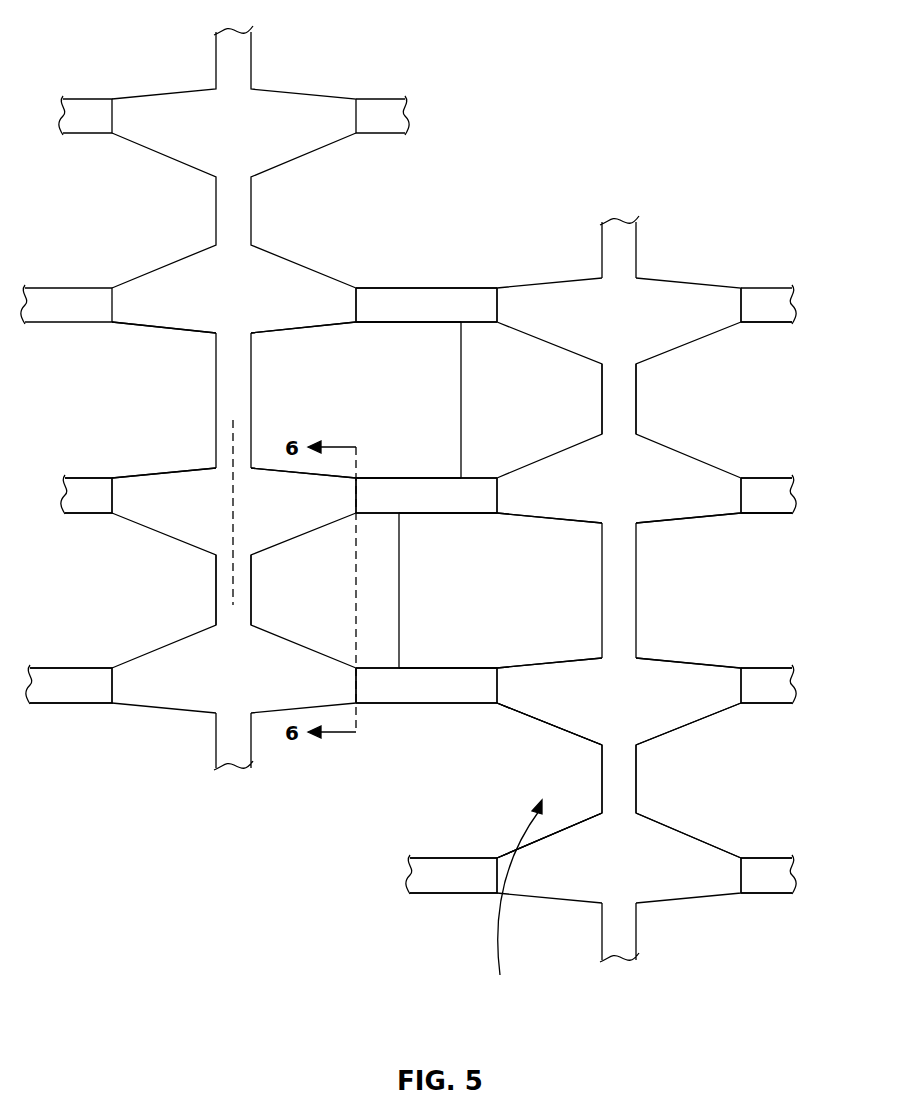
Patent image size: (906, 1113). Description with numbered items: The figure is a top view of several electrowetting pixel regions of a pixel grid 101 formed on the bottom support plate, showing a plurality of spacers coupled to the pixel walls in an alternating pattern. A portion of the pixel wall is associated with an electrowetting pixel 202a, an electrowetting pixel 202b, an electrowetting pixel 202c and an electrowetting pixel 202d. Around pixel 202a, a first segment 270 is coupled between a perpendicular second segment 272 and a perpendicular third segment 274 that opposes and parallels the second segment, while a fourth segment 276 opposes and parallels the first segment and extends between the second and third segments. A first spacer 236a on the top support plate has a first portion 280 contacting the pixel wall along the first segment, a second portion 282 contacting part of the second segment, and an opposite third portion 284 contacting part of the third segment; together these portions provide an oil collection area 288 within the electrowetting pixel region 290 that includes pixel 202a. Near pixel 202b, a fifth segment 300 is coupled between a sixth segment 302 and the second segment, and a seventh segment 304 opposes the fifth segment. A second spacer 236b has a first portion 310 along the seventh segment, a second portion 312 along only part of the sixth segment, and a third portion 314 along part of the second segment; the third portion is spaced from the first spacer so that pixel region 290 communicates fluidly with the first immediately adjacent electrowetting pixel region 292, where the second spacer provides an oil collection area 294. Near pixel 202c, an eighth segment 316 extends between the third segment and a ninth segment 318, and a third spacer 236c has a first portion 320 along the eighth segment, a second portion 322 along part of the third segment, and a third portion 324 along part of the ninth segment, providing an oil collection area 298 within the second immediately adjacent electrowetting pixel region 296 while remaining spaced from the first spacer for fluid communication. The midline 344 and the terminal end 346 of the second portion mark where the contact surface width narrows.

The pixel grid 101 is at (553, 73).
The electrowetting pixel 202a is at (522, 552).
The electrowetting pixel 202b is at (275, 372).
The electrowetting pixel 202c is at (460, 839).
The electrowetting pixel 202d is at (734, 589).
The first spacer 236a is at (173, 709).
The second spacer 236b is at (662, 260).
The third spacer 236c is at (575, 906).
The first segment 270 is at (215, 568).
The second segment 272 is at (412, 494).
The third segment 274 is at (418, 705).
The fourth segment 276 is at (626, 560).
The first portion 280 is at (225, 600).
The second portion 282 is at (133, 512).
The third portion 284 is at (125, 672).
The oil collection area 288 is at (400, 586).
The electrowetting pixel region 290 is at (529, 639).
The first immediately adjacent electrowetting pixel region 292 is at (370, 372).
The oil collection area 294 is at (461, 385).
The second immediately adjacent electrowetting pixel region 296 is at (515, 759).
The oil collection area 298 is at (511, 901).
The fifth segment 300 is at (216, 403).
The sixth segment 302 is at (436, 287).
The seventh segment 304 is at (637, 382).
The first portion 310 is at (628, 400).
The second portion 312 is at (722, 286).
The third portion 314 is at (725, 480).
The eighth segment 316 is at (638, 763).
The ninth segment 318 is at (452, 884).
The first portion 320 is at (628, 787).
The second portion 322 is at (703, 670).
The third portion 324 is at (700, 884).
The midline 344 is at (236, 481).
The terminal end 346 is at (357, 490).